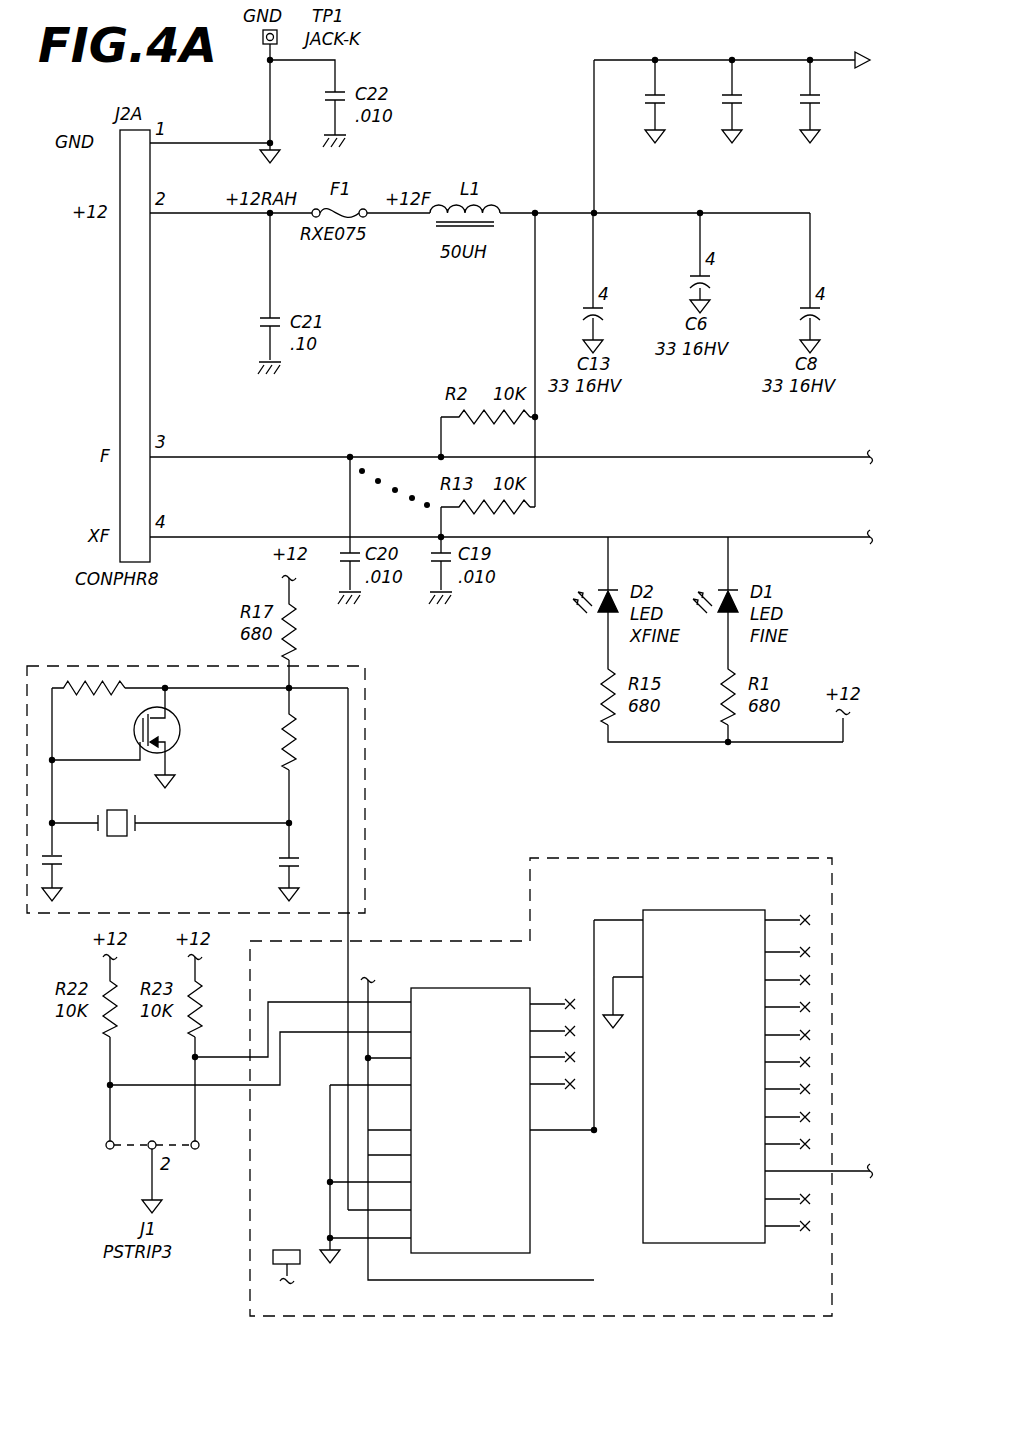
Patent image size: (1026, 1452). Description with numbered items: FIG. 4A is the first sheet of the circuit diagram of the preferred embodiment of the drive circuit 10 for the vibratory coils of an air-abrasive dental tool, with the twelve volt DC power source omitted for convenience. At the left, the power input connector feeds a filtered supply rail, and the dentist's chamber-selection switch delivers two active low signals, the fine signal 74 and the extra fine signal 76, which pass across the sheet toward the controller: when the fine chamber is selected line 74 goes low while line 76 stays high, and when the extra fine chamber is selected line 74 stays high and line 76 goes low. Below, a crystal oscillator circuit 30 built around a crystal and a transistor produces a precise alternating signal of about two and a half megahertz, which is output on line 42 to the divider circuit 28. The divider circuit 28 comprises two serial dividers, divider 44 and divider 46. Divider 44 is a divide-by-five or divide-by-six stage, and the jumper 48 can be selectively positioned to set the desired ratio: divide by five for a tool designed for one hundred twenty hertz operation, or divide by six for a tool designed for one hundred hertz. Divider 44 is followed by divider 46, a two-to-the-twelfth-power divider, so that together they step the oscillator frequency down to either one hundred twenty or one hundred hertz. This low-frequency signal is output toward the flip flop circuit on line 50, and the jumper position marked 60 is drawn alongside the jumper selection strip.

The drive circuit 10 is at (470, 68).
The fine signal 74 is at (192, 457).
The extra fine signal 76 is at (192, 537).
The line 42 is at (365, 737).
The crystal oscillator circuit 30 is at (365, 822).
The divider circuit 28 is at (550, 858).
The divider 46 is at (748, 910).
The divider 44 is at (425, 988).
The jumper 48 is at (273, 1257).
The jumper position 1 60 is at (114, 1160).
The line 50 is at (197, 1160).